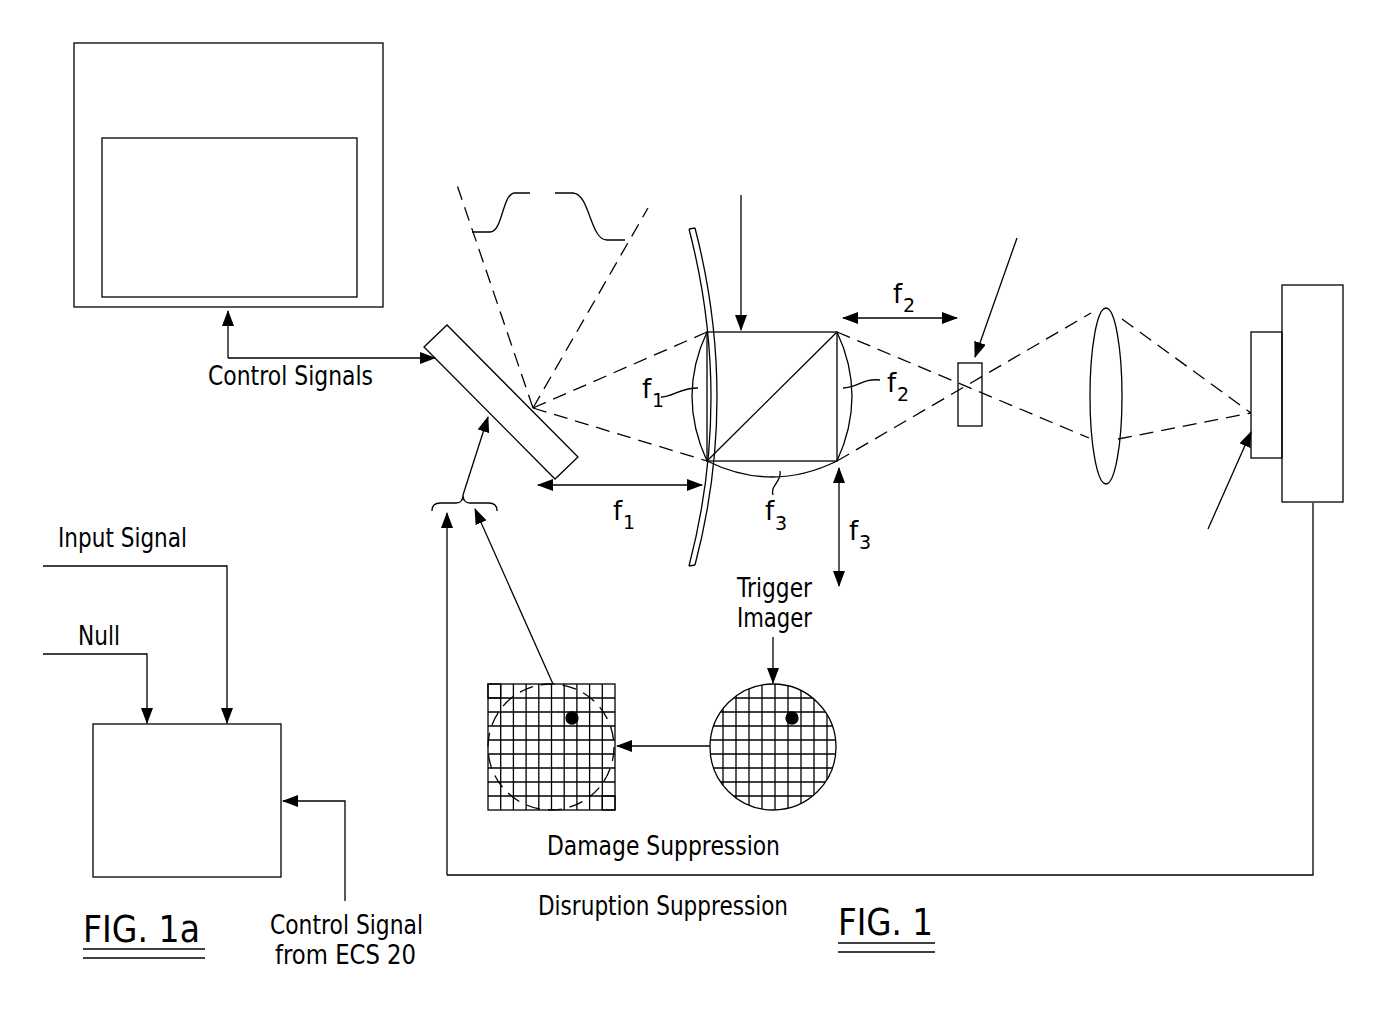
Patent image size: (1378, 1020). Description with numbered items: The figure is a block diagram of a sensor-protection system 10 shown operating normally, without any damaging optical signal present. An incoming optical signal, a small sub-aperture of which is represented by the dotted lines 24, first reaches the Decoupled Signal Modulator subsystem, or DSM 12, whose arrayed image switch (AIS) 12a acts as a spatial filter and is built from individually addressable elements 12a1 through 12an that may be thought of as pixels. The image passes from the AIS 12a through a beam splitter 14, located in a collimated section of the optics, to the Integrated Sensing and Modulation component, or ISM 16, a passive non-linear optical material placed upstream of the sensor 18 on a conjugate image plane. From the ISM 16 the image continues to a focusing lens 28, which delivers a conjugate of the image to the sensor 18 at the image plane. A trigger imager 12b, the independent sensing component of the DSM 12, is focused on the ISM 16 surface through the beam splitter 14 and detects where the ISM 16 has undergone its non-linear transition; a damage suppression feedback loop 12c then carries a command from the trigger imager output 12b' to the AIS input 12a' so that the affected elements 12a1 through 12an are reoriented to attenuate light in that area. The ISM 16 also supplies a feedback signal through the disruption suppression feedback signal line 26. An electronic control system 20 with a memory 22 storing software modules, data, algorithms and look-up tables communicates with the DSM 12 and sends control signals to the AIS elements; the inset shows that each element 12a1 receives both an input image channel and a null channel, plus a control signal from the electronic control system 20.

In FIG. 1, the system 10 is at (1195, 189).
In FIG. 1, the Decoupled Signal Modulator subsystem 12 is at (478, 404).
In FIG. 1, the arrayed image switch 12a is at (551, 700).
In FIG. 1, the first element of the arrayed image switch 12a1 is at (498, 695).
In FIG. 1a, the first element of the arrayed image switch 12a1 is at (187, 800).
In FIG. 1, the input of the arrayed image switch 12a' is at (596, 684).
In FIG. 1, the nth element of the arrayed image switch 12an is at (615, 808).
In FIG. 1, the trigger imager 12b is at (774, 724).
In FIG. 1, the output of the trigger imager 12b' is at (751, 700).
In FIG. 1, the damage suppression feedback loop 12c is at (643, 742).
In FIG. 1, the beam splitter 14 is at (777, 336).
In FIG. 1, the Integrated Sensing and Modulation component 16 is at (970, 430).
In FIG. 1, the sensor 18 is at (1304, 298).
In FIG. 1, the electronic control system 20 is at (238, 132).
In FIG. 1, the memory 22 is at (238, 286).
In FIG. 1, the dotted lines representing incoming light 24 is at (552, 294).
In FIG. 1, the disruption suppression feedback signal line 26 is at (992, 875).
In FIG. 1, the focusing lens 28 is at (1094, 333).